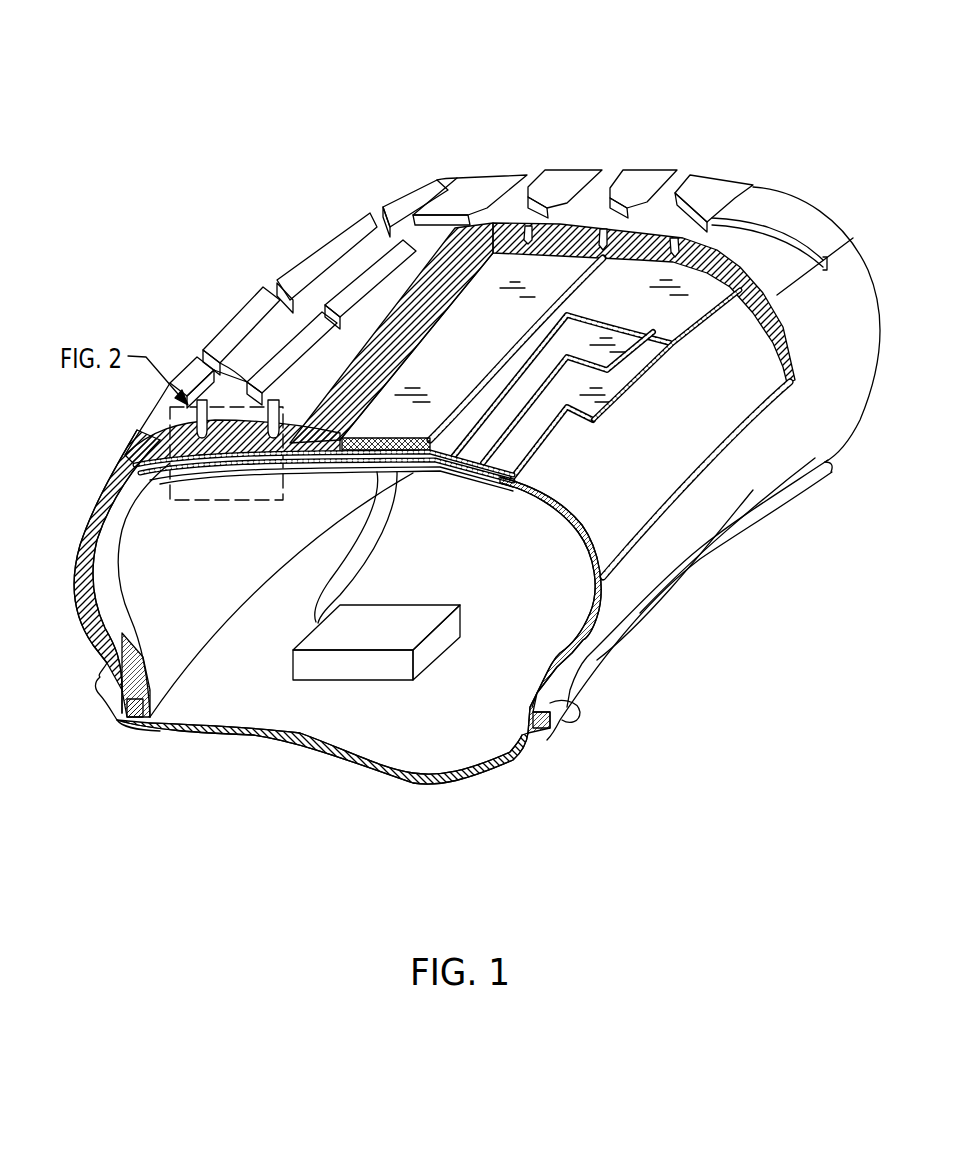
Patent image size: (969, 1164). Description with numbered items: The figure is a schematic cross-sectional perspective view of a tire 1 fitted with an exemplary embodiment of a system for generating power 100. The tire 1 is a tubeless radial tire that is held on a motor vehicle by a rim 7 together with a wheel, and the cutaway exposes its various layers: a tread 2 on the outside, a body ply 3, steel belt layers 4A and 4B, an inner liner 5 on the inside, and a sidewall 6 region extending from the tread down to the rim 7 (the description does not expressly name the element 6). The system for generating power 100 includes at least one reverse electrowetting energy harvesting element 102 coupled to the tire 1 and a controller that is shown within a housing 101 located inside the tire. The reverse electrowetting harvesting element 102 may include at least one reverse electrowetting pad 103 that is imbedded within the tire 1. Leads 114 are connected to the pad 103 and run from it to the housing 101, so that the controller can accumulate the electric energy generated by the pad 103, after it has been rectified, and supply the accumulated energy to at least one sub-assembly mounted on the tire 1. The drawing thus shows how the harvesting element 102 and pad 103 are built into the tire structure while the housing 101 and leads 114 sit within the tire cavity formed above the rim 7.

The tire 1 is at (770, 58).
The tread 2 is at (293, 337).
The body ply 3 is at (645, 278).
The steel belt layer 4A is at (610, 353).
The steel belt layer 4B is at (600, 390).
The inner liner 5 is at (607, 500).
The sidewall 6 is at (153, 683).
The rim 7 is at (422, 787).
The system for generating power 100 is at (316, 718).
The housing 101 is at (360, 670).
The reverse electrowetting energy harvesting element 102 is at (463, 300).
The reverse electrowetting pad 103 is at (383, 428).
The leads 114 is at (390, 540).